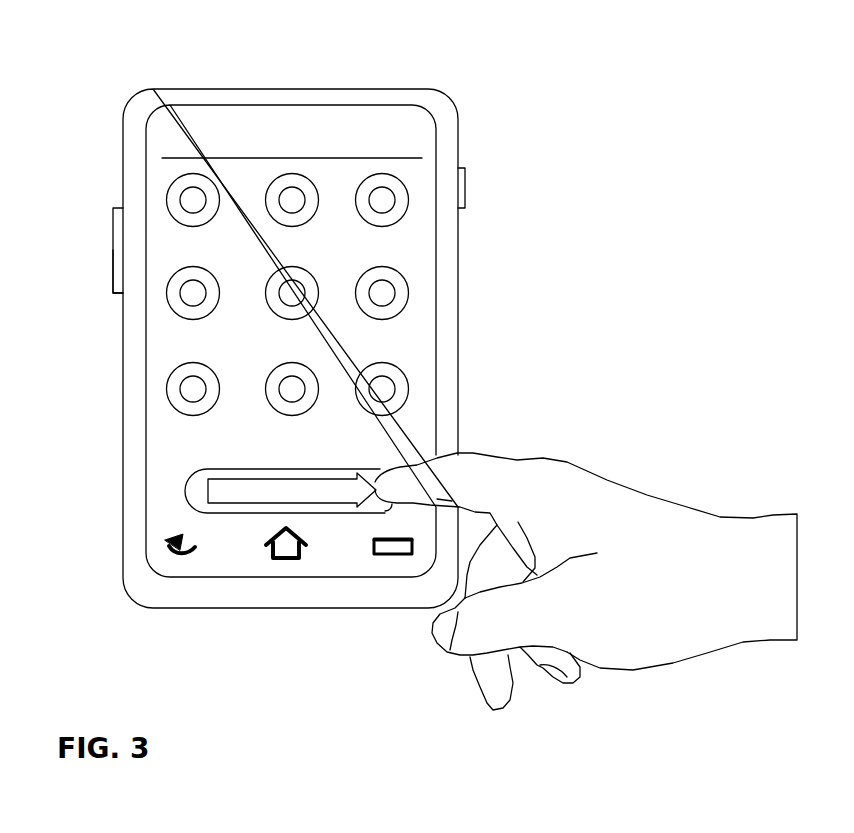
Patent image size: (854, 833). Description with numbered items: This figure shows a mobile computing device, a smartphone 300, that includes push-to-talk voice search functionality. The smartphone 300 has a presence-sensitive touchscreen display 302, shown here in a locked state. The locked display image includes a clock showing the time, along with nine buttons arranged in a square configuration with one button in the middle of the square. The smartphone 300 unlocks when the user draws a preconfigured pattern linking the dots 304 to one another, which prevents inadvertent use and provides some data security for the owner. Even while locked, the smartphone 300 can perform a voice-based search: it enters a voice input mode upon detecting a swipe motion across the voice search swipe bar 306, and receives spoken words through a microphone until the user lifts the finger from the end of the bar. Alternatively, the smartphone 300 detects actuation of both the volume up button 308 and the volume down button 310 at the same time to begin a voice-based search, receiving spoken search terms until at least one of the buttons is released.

The smartphone 300 is at (445, 90).
The presence-sensitive touchscreen display 302 is at (436, 230).
The dots 304 is at (408, 306).
The voice search swipe bar 306 is at (187, 500).
The volume up button 308 is at (113, 222).
The volume down button 310 is at (113, 287).